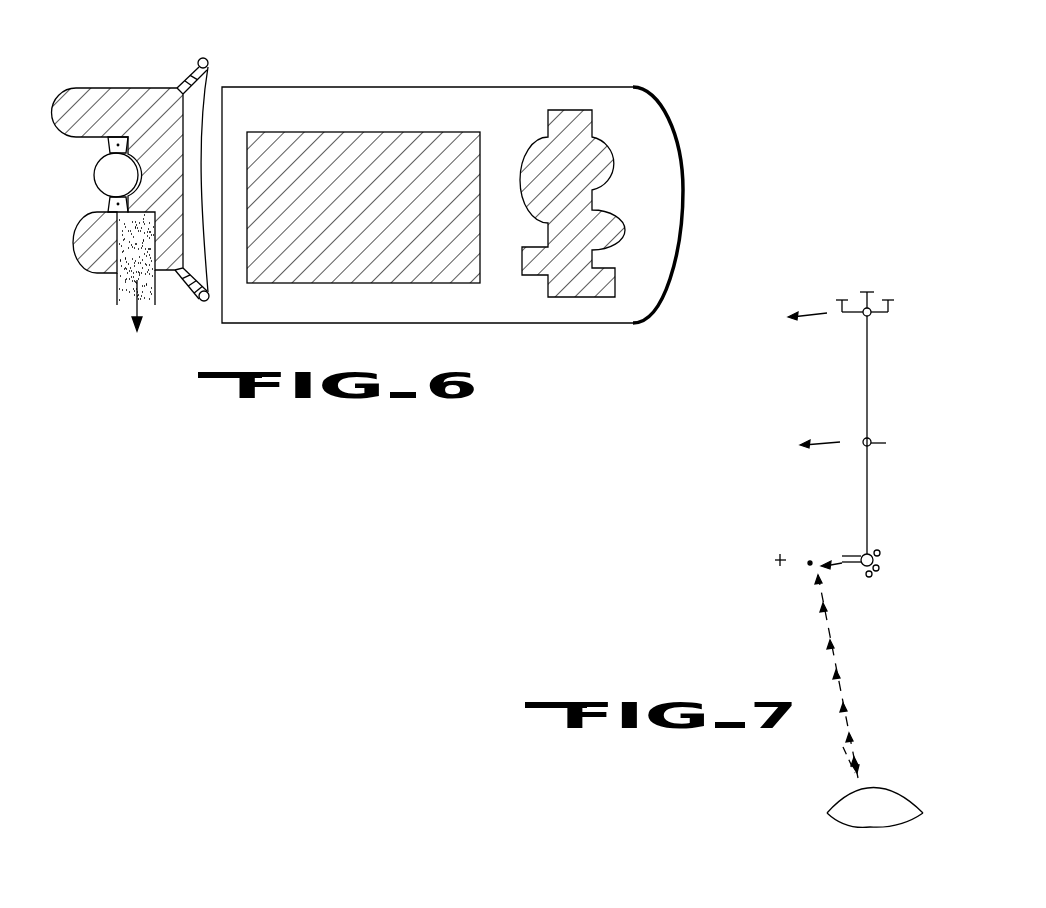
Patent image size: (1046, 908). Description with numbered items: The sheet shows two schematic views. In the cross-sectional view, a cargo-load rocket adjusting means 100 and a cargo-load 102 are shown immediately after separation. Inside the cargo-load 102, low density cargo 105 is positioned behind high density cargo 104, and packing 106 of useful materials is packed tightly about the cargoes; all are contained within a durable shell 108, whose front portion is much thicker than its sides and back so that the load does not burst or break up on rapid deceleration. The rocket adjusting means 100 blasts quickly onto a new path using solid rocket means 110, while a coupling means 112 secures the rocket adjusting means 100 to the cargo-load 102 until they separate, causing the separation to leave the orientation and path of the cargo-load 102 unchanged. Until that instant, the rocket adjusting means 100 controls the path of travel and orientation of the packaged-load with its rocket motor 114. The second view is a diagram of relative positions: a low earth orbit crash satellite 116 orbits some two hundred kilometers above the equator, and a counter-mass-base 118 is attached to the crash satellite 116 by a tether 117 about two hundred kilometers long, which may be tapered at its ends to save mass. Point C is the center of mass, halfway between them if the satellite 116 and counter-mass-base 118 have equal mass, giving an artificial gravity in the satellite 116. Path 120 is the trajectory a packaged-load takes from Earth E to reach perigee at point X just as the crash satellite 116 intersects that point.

In FIG. 6, the cargo-load rocket adjusting means 100 is at (120, 87).
In FIG. 6, the cargo-load 102 is at (478, 86).
In FIG. 6, the high density cargo 104 is at (584, 198).
In FIG. 6, the low density cargo 105 is at (392, 200).
In FIG. 6, the packing 106 is at (673, 200).
In FIG. 6, the durable shell 108 is at (678, 130).
In FIG. 6, the solid rocket means 110 is at (130, 262).
In FIG. 6, the coupling means 112 is at (195, 179).
In FIG. 6, the rocket motor 114 is at (88, 173).
In FIG. 7, the low earth orbit crash satellite 116 is at (875, 563).
In FIG. 7, the tether 117 is at (867, 490).
In FIG. 7, the counter-mass-base 118 is at (863, 318).
In FIG. 7, the path 120 is at (825, 612).